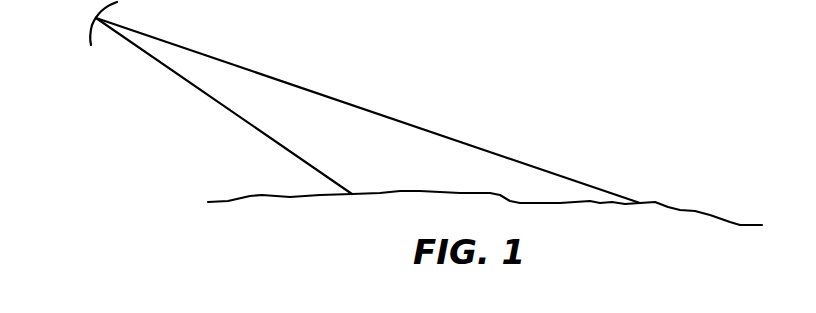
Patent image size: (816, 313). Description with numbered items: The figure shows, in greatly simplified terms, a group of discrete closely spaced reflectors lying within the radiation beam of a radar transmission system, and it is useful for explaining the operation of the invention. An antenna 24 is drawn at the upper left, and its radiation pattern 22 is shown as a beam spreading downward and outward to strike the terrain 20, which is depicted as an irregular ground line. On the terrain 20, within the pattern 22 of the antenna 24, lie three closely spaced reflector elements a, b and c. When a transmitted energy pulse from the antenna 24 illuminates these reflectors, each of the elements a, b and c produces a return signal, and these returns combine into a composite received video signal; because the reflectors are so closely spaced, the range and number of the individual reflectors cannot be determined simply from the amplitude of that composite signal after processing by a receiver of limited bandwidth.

The terrain 20 is at (256, 194).
The pattern 22 is at (336, 97).
The antenna 24 is at (92, 22).
The reflector element a is at (438, 192).
The reflector element b is at (452, 192).
The reflector element c is at (470, 192).